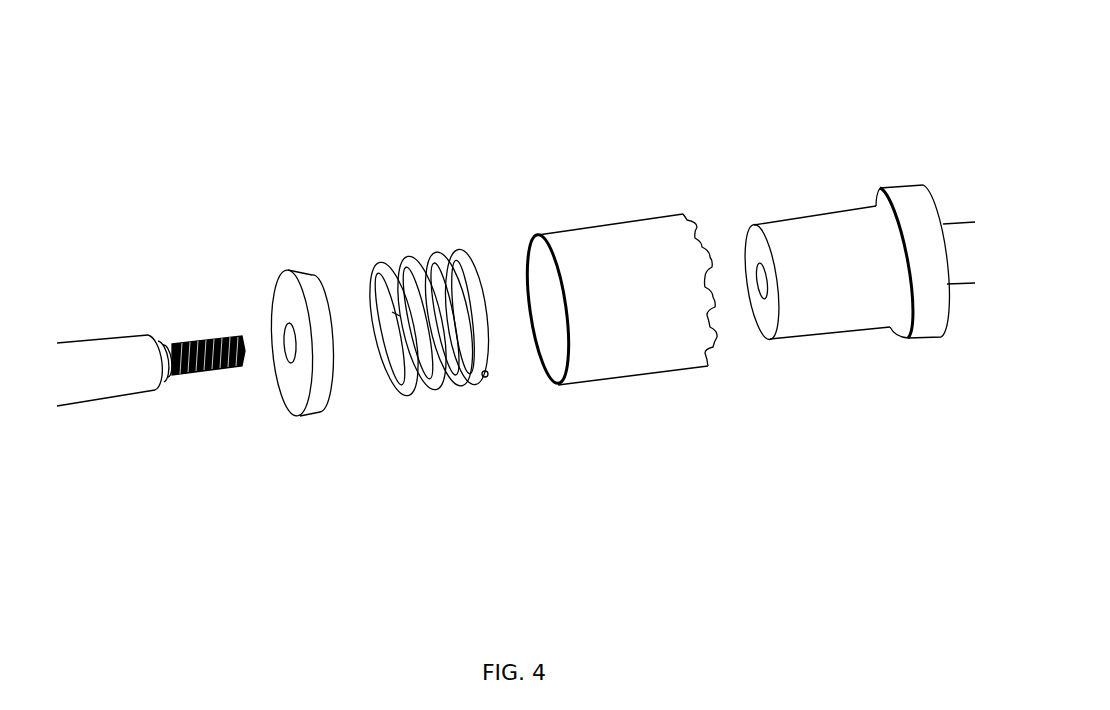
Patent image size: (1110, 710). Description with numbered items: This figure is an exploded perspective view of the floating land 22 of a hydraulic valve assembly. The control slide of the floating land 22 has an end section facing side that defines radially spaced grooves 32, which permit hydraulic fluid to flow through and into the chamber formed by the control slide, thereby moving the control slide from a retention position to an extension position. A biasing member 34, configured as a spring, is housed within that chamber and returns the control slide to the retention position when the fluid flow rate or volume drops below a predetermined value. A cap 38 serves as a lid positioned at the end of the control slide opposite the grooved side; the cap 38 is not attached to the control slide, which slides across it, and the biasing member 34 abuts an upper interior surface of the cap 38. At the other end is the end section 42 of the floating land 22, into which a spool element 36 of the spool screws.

The floating land 22 is at (703, 100).
The radially spaced grooves 32 is at (690, 228).
The biasing member 34 is at (440, 380).
The spool element 36 is at (163, 385).
The cap 38 is at (322, 415).
The end section 42 is at (798, 335).